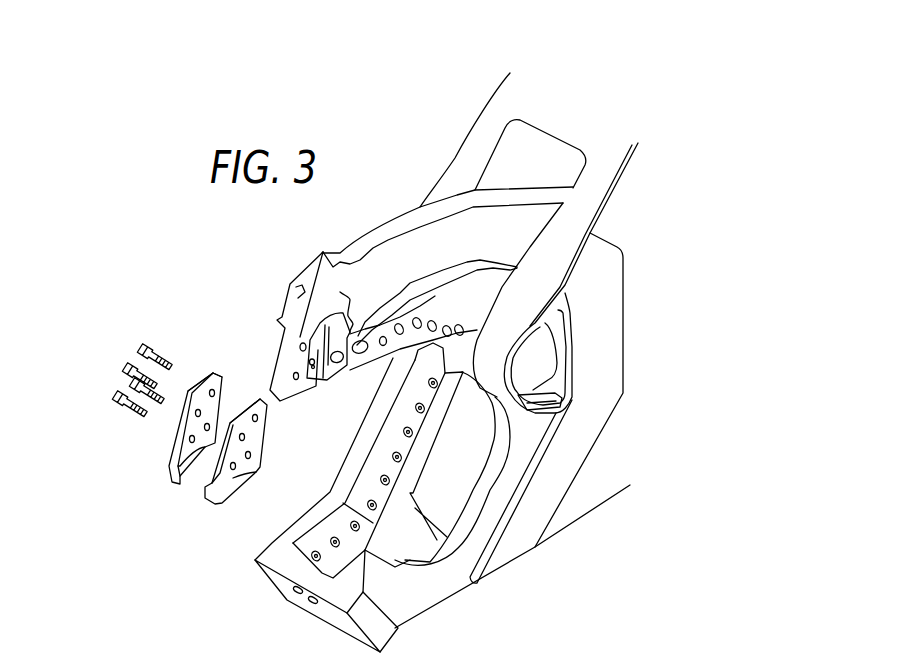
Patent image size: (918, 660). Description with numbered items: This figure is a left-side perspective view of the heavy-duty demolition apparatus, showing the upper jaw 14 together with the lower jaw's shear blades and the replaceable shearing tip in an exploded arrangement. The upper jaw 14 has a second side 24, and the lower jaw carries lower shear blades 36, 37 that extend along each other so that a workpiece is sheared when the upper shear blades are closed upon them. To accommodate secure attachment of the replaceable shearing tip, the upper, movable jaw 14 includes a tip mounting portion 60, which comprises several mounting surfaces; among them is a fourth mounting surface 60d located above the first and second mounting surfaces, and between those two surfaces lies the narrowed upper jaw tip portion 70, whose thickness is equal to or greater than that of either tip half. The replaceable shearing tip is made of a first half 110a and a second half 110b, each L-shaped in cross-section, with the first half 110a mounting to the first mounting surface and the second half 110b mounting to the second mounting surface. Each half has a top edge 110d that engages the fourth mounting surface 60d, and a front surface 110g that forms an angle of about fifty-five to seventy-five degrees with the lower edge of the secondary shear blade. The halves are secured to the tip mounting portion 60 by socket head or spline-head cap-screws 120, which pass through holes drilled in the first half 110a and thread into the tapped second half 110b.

The upper jaw 14 is at (528, 197).
The second side 24 is at (380, 250).
The lower shear blade 36 is at (397, 456).
The lower shear blade 37 is at (303, 543).
The tip mounting portion 60 is at (273, 307).
The narrowed upper jaw tip portion 70 is at (287, 343).
The fourth mounting surface 60d is at (311, 366).
The first half 110a is at (154, 410).
The second half 110b is at (258, 481).
The top edge 110d is at (203, 377).
The front surface 110g is at (168, 457).
The cap-screws 120 is at (145, 348).